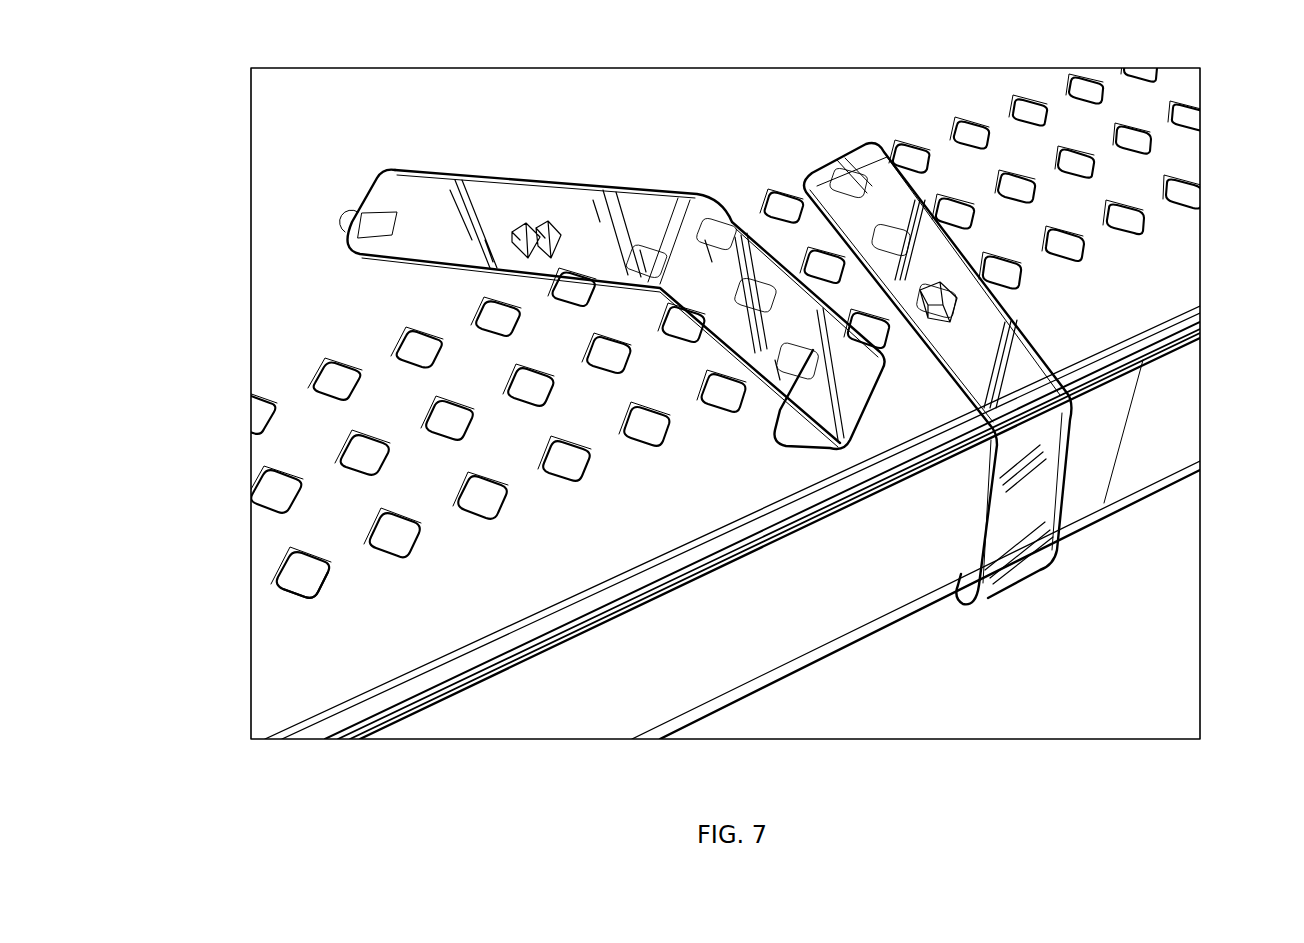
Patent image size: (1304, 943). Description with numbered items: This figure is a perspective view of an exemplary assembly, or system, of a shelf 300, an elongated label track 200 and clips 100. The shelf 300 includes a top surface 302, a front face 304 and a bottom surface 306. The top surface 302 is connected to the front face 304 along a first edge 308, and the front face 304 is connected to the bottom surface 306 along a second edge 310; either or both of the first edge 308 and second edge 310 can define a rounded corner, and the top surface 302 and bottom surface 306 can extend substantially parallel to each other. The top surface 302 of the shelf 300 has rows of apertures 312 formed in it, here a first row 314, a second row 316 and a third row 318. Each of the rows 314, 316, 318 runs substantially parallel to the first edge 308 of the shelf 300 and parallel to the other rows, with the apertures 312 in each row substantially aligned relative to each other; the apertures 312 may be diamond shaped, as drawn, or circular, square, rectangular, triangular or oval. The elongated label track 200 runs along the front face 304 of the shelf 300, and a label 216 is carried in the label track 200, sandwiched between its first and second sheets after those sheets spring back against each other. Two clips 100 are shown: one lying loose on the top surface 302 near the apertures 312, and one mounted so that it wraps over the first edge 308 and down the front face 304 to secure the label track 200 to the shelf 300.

The clip 100 is at (612, 182).
The elongated label track 200 is at (765, 527).
The label 216 is at (1190, 373).
The shelf 300 is at (728, 407).
The top surface 302 is at (695, 366).
The front face 304 is at (1178, 328).
The bottom surface 306 is at (858, 647).
The first edge 308 is at (318, 735).
The second edge 310 is at (933, 607).
The apertures 312 is at (278, 592).
The first row 314 is at (288, 620).
The second row 316 is at (268, 522).
The third row 318 is at (265, 445).